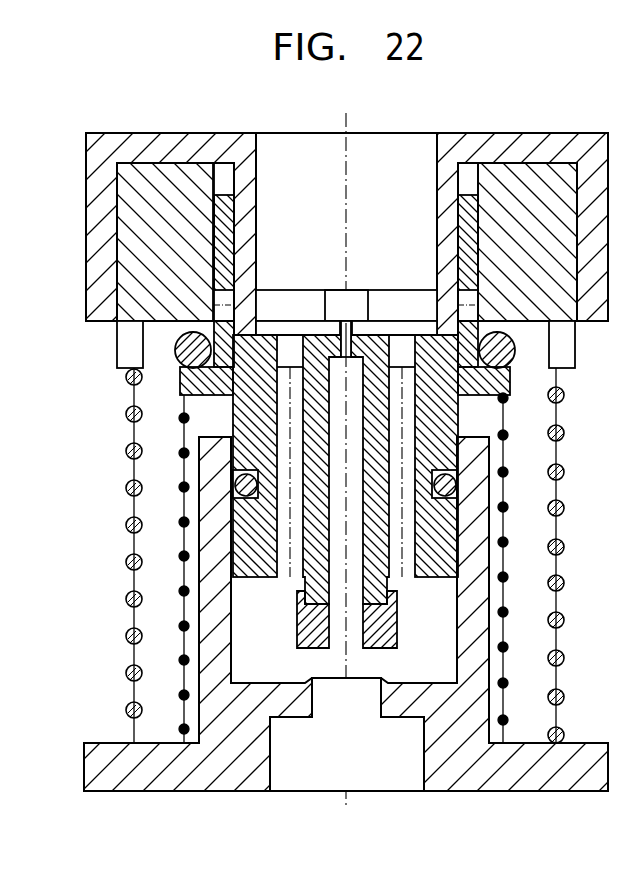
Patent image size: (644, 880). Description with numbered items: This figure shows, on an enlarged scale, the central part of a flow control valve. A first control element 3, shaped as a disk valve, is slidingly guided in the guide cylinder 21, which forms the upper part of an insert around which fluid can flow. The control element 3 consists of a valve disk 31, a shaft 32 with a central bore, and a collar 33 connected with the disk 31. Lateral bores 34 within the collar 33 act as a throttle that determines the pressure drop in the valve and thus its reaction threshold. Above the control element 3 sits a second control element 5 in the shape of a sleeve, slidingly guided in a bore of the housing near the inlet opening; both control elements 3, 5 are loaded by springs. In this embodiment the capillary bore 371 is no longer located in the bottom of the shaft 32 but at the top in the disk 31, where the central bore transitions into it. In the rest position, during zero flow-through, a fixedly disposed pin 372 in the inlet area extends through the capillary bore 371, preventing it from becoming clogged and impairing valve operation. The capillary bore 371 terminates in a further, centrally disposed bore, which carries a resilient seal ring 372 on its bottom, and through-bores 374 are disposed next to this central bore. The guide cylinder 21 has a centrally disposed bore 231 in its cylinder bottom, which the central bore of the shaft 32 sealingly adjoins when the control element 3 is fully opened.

The second control element 5 is at (150, 300).
The first control element 3 is at (334, 430).
The collar 33 is at (234, 226).
The lateral bores 34 is at (257, 288).
The pin 372 is at (345, 338).
The capillary bore 371 is at (365, 334).
The through-bores 374 is at (288, 563).
The valve disk 31 is at (510, 388).
The shaft 32 is at (452, 529).
The guide cylinder 21 is at (472, 617).
The centrally disposed bore 231 is at (328, 707).